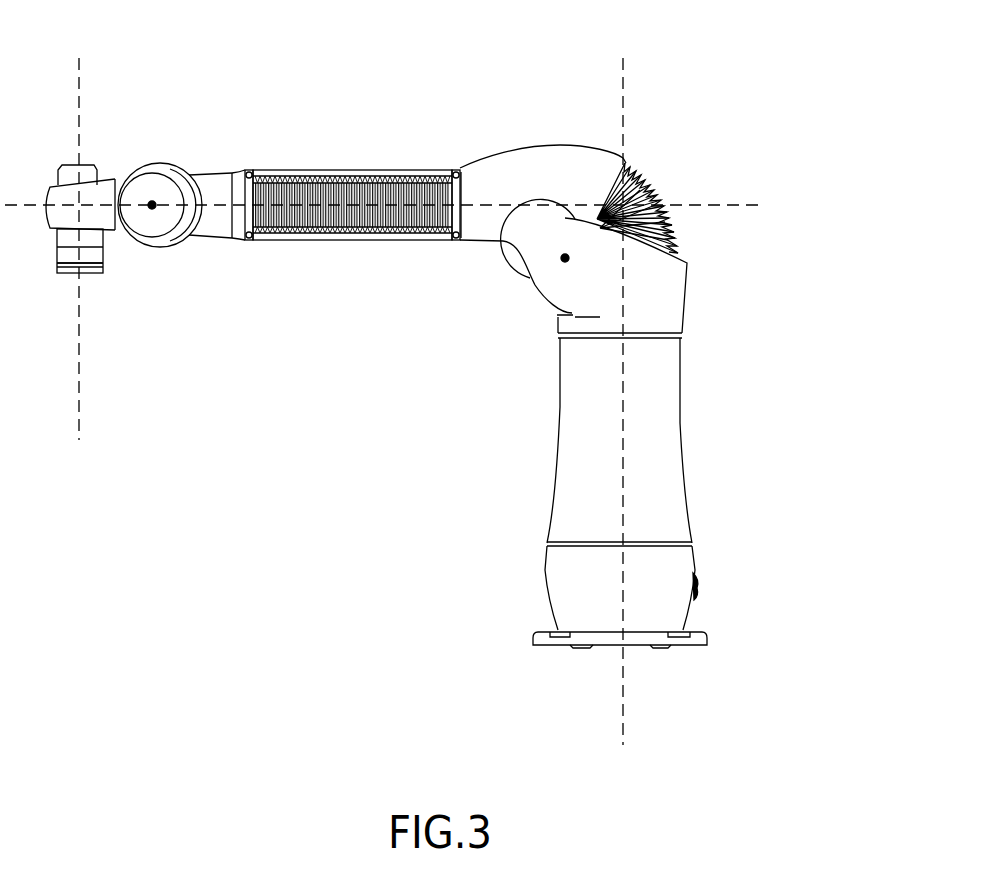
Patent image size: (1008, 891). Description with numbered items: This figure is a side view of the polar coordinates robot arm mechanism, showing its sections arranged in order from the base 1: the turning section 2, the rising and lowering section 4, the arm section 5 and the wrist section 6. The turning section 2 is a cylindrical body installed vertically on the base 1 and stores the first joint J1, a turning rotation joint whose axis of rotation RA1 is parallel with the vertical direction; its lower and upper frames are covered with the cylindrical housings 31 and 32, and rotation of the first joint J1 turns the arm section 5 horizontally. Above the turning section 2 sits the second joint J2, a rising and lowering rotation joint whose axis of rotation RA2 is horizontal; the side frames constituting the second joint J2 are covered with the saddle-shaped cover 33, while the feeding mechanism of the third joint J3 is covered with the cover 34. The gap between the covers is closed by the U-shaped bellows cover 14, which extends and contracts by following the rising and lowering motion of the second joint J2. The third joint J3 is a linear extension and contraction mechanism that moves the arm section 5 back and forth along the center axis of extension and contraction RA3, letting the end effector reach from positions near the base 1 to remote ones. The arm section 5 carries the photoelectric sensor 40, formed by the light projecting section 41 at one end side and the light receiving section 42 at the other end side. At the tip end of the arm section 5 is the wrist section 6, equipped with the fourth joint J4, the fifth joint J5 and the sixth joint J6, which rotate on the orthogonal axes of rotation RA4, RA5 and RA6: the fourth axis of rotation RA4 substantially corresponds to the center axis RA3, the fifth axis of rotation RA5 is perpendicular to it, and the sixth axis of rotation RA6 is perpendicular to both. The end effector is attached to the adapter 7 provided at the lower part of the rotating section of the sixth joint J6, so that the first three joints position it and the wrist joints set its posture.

The base 1 is at (705, 633).
The turning section 2 is at (626, 433).
The rising and lowering section 4 is at (590, 228).
The arm section 5 is at (314, 168).
The wrist section 6 is at (128, 195).
The adapter 7 is at (100, 273).
The U-shaped bellows cover 14 is at (657, 192).
The cylindrical housing 31 is at (695, 562).
The cylindrical housing 32 is at (680, 427).
The cover 33 is at (687, 283).
The cover 34 is at (500, 158).
The photoelectric sensor 40 is at (355, 230).
The light projecting section 41 is at (455, 170).
The light receiving section 42 is at (252, 170).
The first joint J1 is at (697, 537).
The second joint J2 is at (540, 289).
The third joint J3 is at (467, 213).
The fourth joint J4 is at (225, 218).
The fifth joint J5 is at (133, 175).
The sixth joint J6 is at (48, 270).
The axis of rotation RA1 is at (620, 384).
The axis of rotation RA2 is at (563, 264).
The center axis of extension and contraction RA3 is at (433, 210).
The fourth axis of rotation RA4 is at (433, 210).
The fifth axis of rotation RA5 is at (154, 203).
The sixth axis of rotation RA6 is at (105, 232).